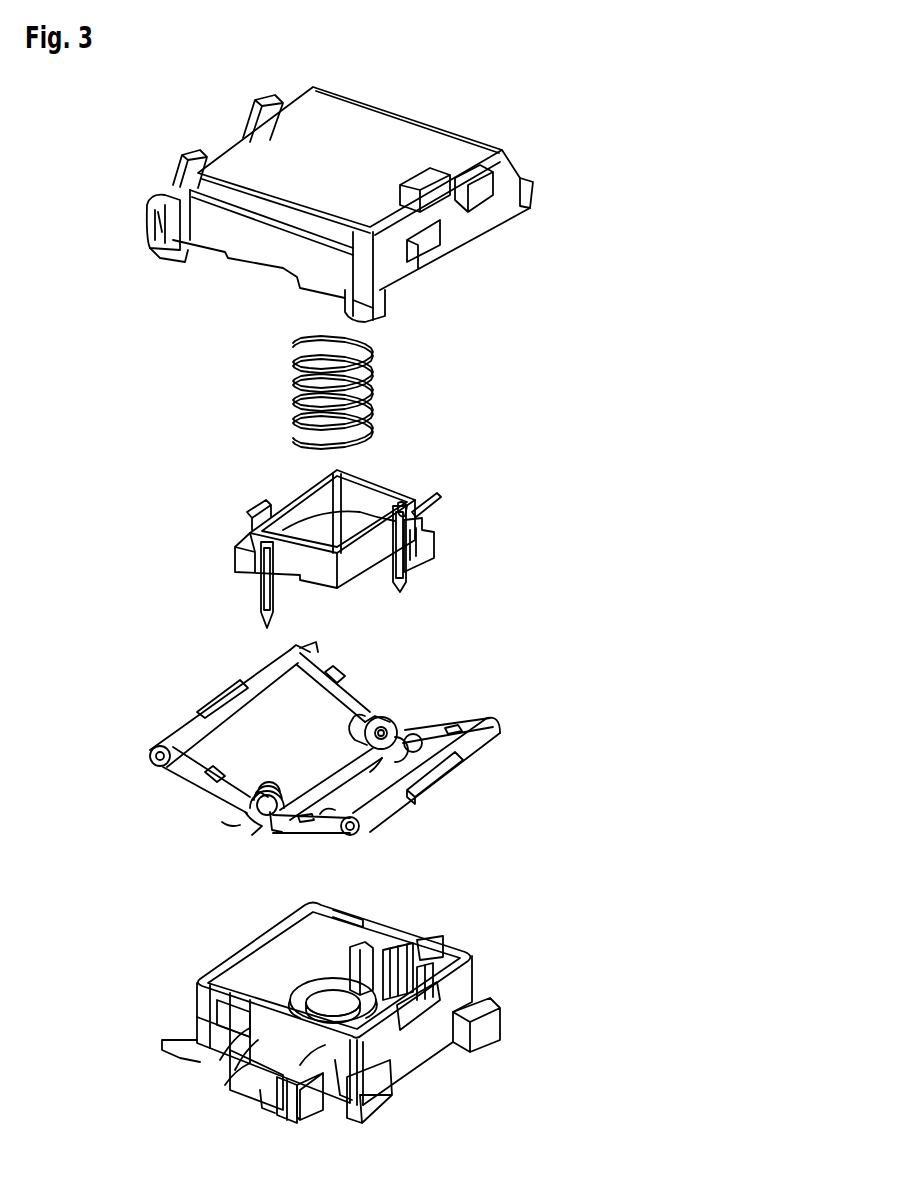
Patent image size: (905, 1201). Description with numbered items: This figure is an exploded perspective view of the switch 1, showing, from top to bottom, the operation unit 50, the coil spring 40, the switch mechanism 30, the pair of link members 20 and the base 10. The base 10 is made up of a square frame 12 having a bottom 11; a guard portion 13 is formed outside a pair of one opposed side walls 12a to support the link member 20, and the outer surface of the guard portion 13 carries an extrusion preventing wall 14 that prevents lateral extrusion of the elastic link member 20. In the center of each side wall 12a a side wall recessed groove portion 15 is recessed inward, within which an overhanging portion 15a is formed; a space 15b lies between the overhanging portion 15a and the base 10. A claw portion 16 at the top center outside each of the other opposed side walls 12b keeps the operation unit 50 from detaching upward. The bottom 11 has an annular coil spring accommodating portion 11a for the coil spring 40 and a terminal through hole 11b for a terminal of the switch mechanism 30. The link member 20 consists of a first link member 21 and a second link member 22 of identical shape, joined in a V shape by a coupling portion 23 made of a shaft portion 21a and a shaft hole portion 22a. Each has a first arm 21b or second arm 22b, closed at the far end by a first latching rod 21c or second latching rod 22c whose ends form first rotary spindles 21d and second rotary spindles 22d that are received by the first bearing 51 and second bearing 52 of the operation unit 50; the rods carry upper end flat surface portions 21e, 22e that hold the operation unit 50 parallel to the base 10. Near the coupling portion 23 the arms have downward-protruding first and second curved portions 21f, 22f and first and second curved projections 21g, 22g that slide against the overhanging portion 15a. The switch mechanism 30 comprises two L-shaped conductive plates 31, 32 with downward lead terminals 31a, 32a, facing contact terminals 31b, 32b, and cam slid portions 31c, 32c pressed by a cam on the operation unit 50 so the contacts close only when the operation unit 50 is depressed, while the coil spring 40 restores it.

The switch 1 is at (610, 302).
The base 10 is at (311, 1025).
The bottom 11 is at (300, 970).
The coil spring accommodating portion 11a is at (395, 960).
The terminal through hole 11b is at (330, 962).
The square frame 12 is at (491, 984).
The one opposed side walls 12a is at (345, 913).
The other opposed side walls 12b is at (240, 960).
The guard portion 13 is at (485, 1010).
The extrusion preventing wall 14 is at (252, 1108).
The side wall recessed groove portion 15 is at (240, 1090).
The overhanging portion 15a is at (230, 1085).
The space 15b is at (260, 1092).
The claw portion 16 is at (430, 1050).
The link member 20 is at (334, 748).
The first link member 21 is at (404, 780).
The shaft portion 21a is at (358, 775).
The first arm 21b is at (448, 722).
The first latching rod 21c is at (390, 813).
The first rotary spindle 21d is at (355, 834).
The upper end flat surface portion 21e is at (442, 783).
The first curved portion 21f is at (276, 840).
The first curved projection 21g is at (316, 806).
The second link member 22 is at (263, 748).
The shaft hole portion 22a is at (392, 716).
The second arm 22b is at (347, 688).
The second latching rod 22c is at (180, 740).
The second rotary spindle 22d is at (150, 760).
The upper end flat surface portion 22e is at (218, 700).
The second curved portion 22f is at (236, 840).
The second curved projection 22g is at (338, 717).
The coupling portion 23 is at (287, 788).
The switch mechanism 30 is at (360, 532).
The L-shaped conductive plate 31 is at (360, 578).
The lead terminal 31a is at (262, 604).
The contact terminal 31b is at (398, 503).
The cam slid portion 31c is at (433, 496).
The L-shaped conductive plate 32 is at (305, 495).
The lead terminal 32a is at (406, 584).
The contact terminal 32b is at (416, 564).
The cam slid portion 32c is at (247, 530).
The coil spring 40 is at (394, 372).
The operation unit 50 is at (508, 118).
The first bearing 51 is at (385, 314).
The second bearing 52 is at (148, 238).